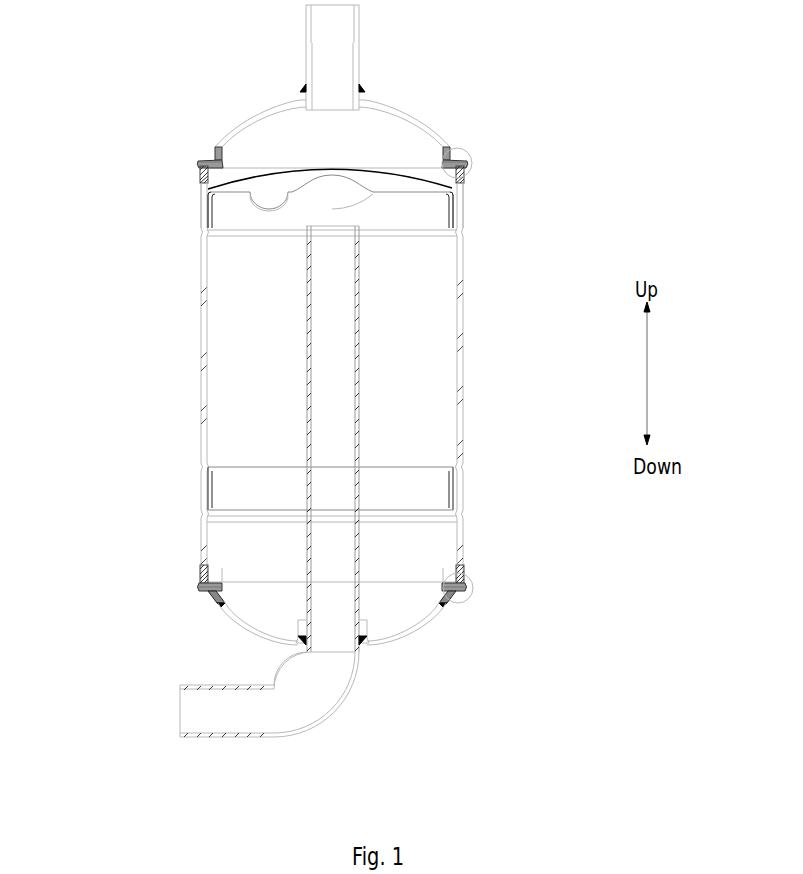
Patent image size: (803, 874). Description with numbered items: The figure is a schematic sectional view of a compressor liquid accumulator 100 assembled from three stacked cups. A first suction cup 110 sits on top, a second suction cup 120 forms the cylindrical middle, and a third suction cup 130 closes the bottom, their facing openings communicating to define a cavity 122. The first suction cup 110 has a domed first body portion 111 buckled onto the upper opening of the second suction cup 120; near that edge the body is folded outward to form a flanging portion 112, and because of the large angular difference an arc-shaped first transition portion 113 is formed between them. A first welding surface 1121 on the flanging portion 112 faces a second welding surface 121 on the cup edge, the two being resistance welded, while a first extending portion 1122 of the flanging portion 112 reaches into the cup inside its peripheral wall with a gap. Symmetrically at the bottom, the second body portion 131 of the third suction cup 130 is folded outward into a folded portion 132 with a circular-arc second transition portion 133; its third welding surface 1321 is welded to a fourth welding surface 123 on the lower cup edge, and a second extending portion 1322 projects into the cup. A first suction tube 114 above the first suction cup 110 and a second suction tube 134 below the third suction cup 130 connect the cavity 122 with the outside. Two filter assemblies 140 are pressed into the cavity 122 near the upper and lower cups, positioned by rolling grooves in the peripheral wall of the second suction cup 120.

The compressor liquid accumulator 100 is at (117, 112).
The first suction cup 110 is at (386, 149).
The first body portion 111 is at (397, 110).
The flanging portion 112 is at (458, 157).
The first welding surface 1121 is at (465, 163).
The first extending portion 1122 is at (463, 195).
The first transition portion 113 is at (448, 147).
The first suction tube 114 is at (330, 72).
The second suction cup 120 is at (202, 423).
The second welding surface 121 is at (467, 170).
The cavity 122 is at (223, 373).
The fourth welding surface 123 is at (473, 588).
The third suction cup 130 is at (379, 504).
The second body portion 131 is at (408, 632).
The folded portion 132 is at (460, 592).
The third welding surface 1321 is at (463, 597).
The second extending portion 1322 is at (457, 577).
The second transition portion 133 is at (453, 600).
The second suction tube 134 is at (342, 678).
The filter assembly 140 is at (233, 220).